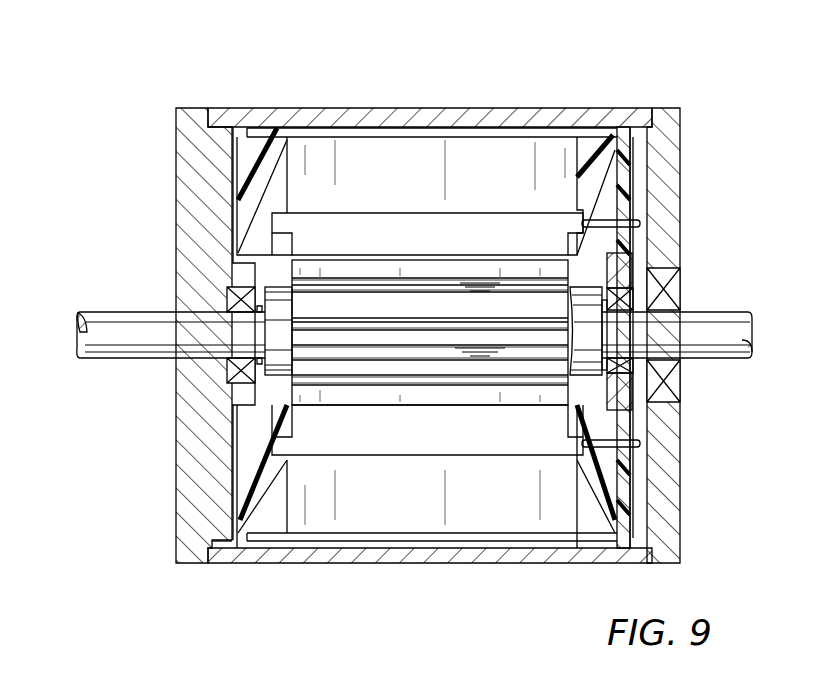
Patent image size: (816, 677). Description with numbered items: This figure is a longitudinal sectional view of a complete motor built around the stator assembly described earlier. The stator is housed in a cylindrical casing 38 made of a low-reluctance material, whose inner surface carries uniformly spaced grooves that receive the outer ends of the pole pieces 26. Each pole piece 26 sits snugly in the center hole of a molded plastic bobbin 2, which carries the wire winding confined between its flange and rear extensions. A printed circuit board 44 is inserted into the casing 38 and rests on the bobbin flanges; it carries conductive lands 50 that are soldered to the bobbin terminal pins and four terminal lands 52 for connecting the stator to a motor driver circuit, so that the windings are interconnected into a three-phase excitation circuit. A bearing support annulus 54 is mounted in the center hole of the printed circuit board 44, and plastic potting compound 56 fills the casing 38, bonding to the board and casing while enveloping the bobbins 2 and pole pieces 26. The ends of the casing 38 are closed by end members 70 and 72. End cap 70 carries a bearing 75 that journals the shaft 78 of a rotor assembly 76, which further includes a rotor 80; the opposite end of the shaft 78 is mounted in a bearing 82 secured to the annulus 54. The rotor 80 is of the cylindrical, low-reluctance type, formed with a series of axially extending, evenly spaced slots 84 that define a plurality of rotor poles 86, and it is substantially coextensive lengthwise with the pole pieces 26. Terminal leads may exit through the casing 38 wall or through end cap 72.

The bobbin 2 is at (413, 157).
The pole piece 26 is at (461, 237).
The cylindrical casing 38 is at (353, 108).
The printed circuit board 44 is at (632, 175).
The conductive land 50 is at (630, 220).
The terminal land 52 is at (650, 152).
The bearing support annulus 54 is at (627, 262).
The potting compound 56 is at (275, 163).
The end member 70 is at (176, 178).
The end member 72 is at (683, 130).
The bearing 75 is at (233, 290).
The rotor assembly 76 is at (73, 334).
The shaft 78 is at (105, 350).
The rotor 80 is at (279, 392).
The bearing 82 is at (630, 297).
The slot 84 is at (373, 318).
The rotor pole 86 is at (543, 290).